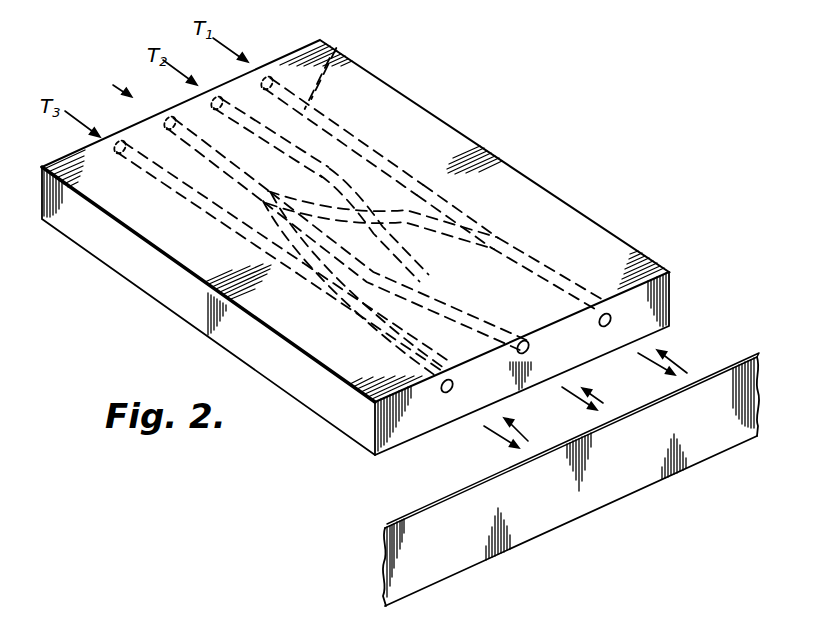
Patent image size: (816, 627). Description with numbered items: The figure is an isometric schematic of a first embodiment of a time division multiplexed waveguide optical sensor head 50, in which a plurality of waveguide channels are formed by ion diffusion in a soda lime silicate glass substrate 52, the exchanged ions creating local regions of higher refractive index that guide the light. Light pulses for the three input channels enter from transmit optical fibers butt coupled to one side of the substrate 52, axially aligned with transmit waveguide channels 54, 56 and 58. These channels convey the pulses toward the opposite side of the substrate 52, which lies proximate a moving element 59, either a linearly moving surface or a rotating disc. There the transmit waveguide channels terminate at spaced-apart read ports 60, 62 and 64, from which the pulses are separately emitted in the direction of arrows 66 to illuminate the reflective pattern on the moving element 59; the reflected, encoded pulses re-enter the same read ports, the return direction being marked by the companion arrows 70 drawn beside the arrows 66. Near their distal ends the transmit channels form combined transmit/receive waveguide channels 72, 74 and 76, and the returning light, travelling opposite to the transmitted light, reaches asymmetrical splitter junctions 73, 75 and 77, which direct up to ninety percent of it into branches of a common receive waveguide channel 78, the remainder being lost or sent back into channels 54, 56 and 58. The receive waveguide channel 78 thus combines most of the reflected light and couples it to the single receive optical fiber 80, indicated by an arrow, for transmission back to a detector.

The optical sensor head 50 is at (438, 66).
The soda lime silicate glass substrate 52 is at (497, 160).
The transmit waveguide channel 54 is at (340, 44).
The transmit waveguide channel 56 is at (264, 132).
The transmit waveguide channel 58 is at (165, 193).
The moving element 59 is at (591, 505).
The read port 60 is at (614, 316).
The read port 62 is at (529, 350).
The read port 64 is at (446, 394).
The arrows 66 is at (488, 441).
The return flow arrows 70 is at (527, 431).
The combined transmit/receive waveguide channel 72 is at (547, 272).
The asymmetrical splitter junction 73 is at (492, 232).
The combined transmit/receive waveguide channel 74 is at (486, 313).
The asymmetrical splitter junction 75 is at (424, 278).
The combined transmit/receive waveguide channel 76 is at (392, 354).
The asymmetrical splitter junction 77 is at (358, 309).
The common receive waveguide channel 78 is at (205, 147).
The receive optical fiber 80 is at (146, 110).